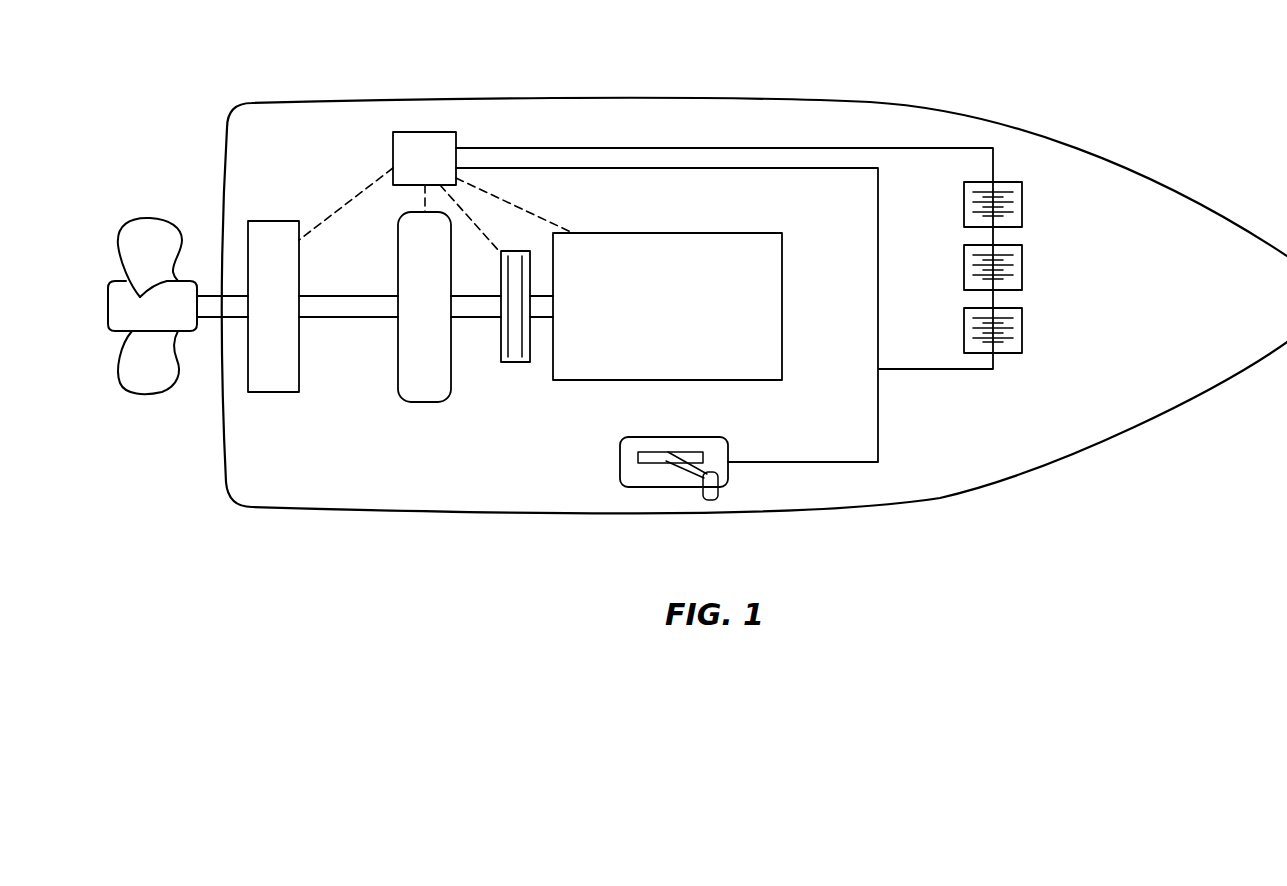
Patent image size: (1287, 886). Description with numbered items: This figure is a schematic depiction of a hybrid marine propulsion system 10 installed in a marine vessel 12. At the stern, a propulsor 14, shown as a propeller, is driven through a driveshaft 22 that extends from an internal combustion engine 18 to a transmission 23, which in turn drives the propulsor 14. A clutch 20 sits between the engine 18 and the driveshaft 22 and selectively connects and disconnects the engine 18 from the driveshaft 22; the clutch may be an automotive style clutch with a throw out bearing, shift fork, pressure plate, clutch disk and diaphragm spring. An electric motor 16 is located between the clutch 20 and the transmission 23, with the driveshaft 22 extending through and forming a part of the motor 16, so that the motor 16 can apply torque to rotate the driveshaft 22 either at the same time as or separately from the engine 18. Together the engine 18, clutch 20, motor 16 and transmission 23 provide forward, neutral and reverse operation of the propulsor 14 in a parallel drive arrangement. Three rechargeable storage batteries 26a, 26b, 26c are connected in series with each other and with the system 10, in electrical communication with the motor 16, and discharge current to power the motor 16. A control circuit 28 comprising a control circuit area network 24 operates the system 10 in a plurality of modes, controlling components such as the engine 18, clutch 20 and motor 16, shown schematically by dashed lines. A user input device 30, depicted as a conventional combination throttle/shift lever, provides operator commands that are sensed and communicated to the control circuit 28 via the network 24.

The hybrid marine propulsion system 10 is at (672, 304).
The marine vessel 12 is at (1198, 195).
The propulsor 14 is at (120, 316).
The electric motor 16 is at (425, 402).
The internal combustion engine 18 is at (752, 233).
The clutch 20 is at (510, 362).
The driveshaft 22 is at (328, 318).
The transmission 23 is at (268, 392).
The control circuit area network 24 is at (619, 148).
The rechargeable storage battery 26a is at (1022, 200).
The rechargeable storage battery 26b is at (1022, 263).
The rechargeable storage battery 26c is at (1022, 325).
The control circuit 28 is at (428, 132).
The user input device 30 is at (620, 478).